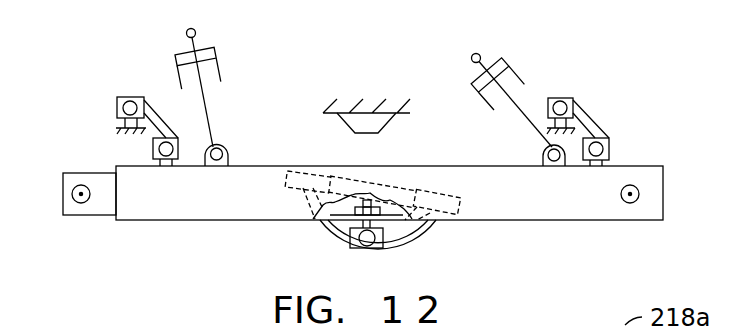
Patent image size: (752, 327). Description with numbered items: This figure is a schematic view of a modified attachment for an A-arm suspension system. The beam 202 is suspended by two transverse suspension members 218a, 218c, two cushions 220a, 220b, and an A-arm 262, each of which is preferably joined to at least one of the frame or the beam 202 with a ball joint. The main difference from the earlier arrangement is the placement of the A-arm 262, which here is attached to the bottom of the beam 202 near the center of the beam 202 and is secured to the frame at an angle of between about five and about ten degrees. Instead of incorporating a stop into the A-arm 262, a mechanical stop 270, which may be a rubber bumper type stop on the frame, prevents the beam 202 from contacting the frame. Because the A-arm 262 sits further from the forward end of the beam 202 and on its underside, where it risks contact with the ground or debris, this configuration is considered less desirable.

The beam 202 is at (217, 221).
The transverse suspension member 218a is at (144, 90).
The transverse suspension member 218c is at (594, 127).
The cushion 220a is at (208, 117).
The cushion 220b is at (517, 104).
The mechanical stop 270 is at (365, 124).
The A-arm 262 is at (413, 240).